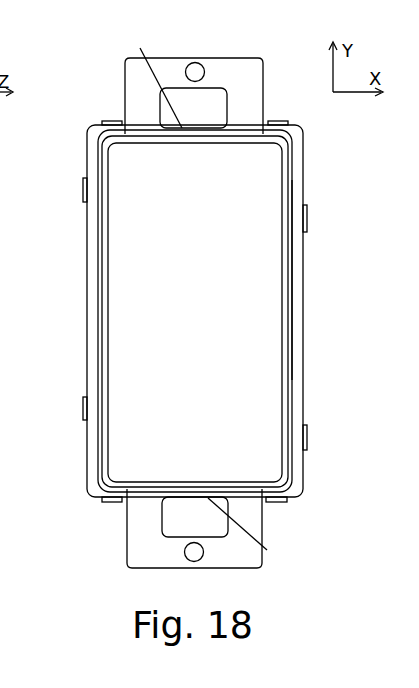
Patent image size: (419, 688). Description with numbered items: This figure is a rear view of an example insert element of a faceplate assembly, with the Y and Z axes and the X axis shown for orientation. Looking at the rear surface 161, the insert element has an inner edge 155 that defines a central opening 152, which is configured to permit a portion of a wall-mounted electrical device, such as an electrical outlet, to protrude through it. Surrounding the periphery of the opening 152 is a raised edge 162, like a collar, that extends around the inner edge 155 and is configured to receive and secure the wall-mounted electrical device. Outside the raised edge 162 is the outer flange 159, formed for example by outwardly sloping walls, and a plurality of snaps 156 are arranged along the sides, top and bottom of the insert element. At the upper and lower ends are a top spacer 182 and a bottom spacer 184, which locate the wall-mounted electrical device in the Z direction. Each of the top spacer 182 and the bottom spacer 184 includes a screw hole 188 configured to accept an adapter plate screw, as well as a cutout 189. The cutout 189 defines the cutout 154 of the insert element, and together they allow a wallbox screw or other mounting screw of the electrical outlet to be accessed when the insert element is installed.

The opening 152 is at (137, 289).
The cutout 154 is at (312, 555).
The inner edge 155 is at (282, 325).
The snaps 156 is at (113, 122).
The outer flange 159 is at (293, 276).
The rear surface 161 is at (88, 482).
The raised edge 162 is at (98, 456).
The top spacer 182 is at (138, 557).
The bottom spacer 184 is at (142, 88).
The screw holes 188 is at (195, 62).
The cutout 189 is at (212, 97).